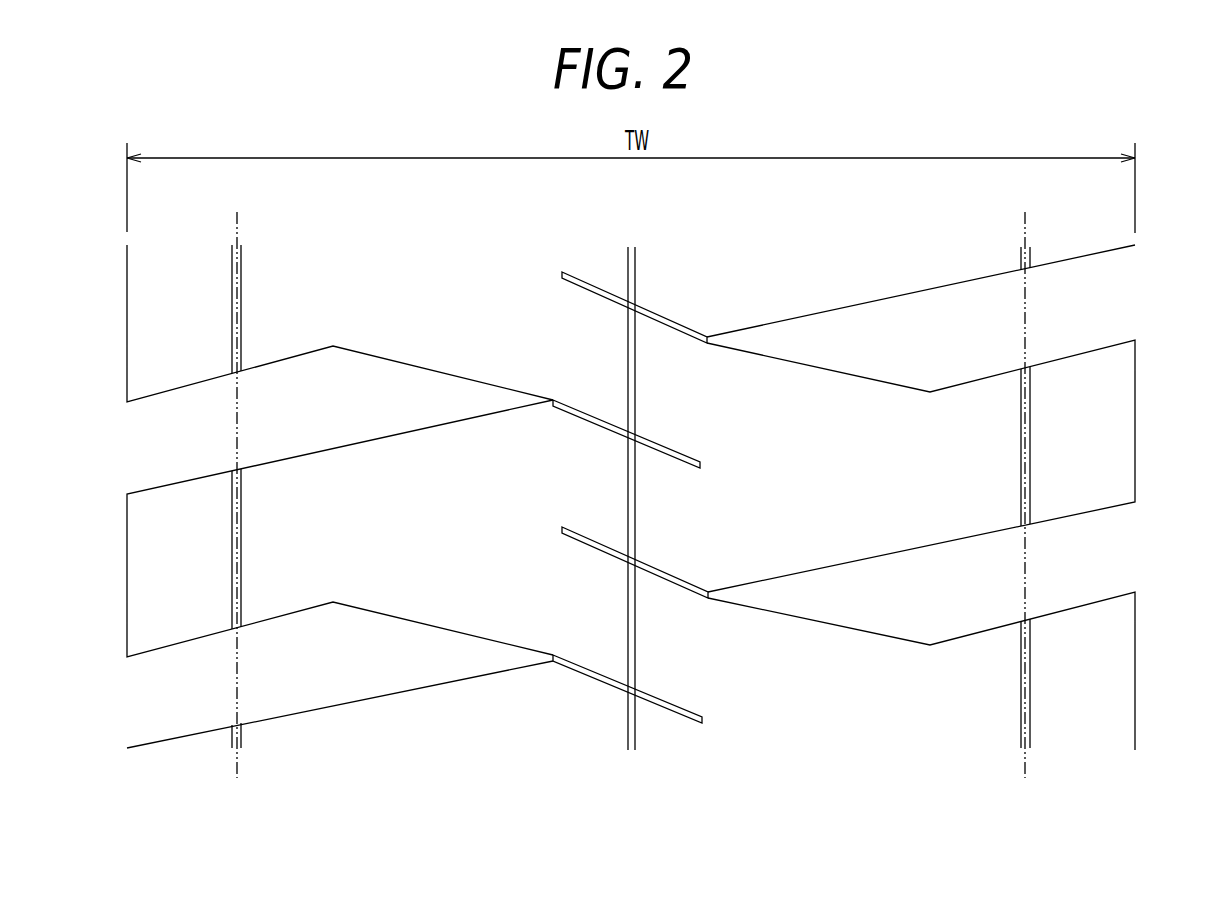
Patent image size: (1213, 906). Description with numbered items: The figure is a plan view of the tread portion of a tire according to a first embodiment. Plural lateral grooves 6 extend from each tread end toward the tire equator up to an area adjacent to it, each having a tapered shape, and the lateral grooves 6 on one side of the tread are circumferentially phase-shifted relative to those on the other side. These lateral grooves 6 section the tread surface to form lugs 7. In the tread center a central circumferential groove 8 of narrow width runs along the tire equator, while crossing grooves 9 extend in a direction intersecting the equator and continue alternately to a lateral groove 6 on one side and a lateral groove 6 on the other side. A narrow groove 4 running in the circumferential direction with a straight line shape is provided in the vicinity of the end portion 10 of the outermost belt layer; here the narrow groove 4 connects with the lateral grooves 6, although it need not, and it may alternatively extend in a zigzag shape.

The narrow groove 4 is at (232, 304).
The lateral groove 6 is at (183, 431).
The lug 7 is at (150, 326).
The central circumferential groove 8 is at (628, 265).
The crossing groove 9 is at (668, 322).
The end portion of the outermost belt layer 10 is at (238, 417).